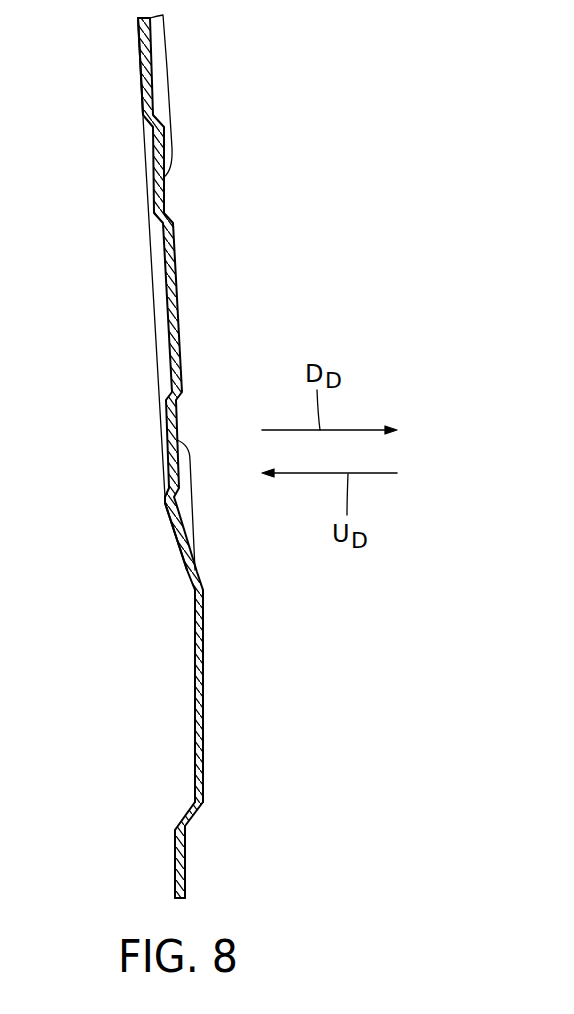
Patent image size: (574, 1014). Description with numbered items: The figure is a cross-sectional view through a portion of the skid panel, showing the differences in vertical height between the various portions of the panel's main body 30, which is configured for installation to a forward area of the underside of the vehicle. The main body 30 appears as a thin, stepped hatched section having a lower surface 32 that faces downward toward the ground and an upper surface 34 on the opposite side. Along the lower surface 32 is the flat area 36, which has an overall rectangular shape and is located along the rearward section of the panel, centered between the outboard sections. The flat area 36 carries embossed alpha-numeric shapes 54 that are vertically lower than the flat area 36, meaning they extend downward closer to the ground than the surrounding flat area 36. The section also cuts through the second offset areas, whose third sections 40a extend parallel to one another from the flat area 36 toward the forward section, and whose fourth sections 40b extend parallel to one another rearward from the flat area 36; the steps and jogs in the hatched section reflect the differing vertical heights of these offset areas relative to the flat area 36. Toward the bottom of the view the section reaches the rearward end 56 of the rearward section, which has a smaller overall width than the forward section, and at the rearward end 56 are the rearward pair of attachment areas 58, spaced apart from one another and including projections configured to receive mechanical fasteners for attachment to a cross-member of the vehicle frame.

The main body 30 is at (219, 88).
The lower surface 32 is at (203, 686).
The upper surface 34 is at (195, 654).
The flat area 36 is at (162, 178).
The third sections 40a is at (140, 63).
The fourth sections 40b is at (178, 541).
The embossed alpha-numeric shapes 54 is at (166, 298).
The rearward end 56 is at (203, 774).
The rearward pair of attachment areas 58 is at (173, 868).